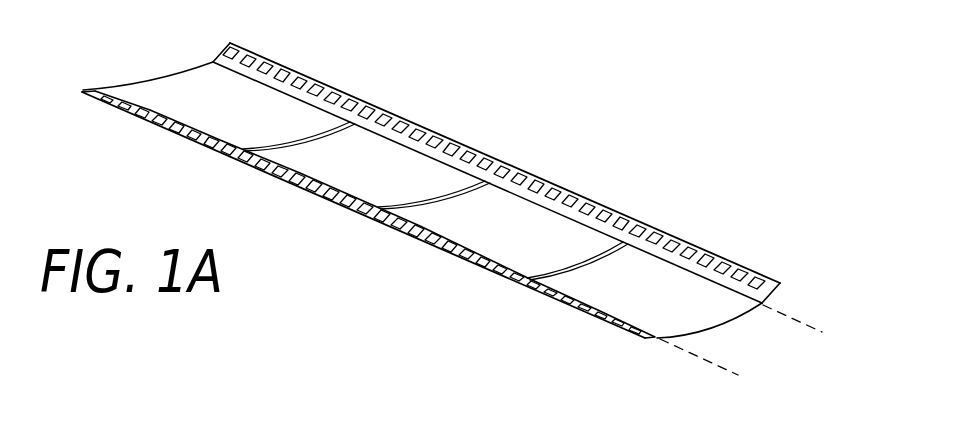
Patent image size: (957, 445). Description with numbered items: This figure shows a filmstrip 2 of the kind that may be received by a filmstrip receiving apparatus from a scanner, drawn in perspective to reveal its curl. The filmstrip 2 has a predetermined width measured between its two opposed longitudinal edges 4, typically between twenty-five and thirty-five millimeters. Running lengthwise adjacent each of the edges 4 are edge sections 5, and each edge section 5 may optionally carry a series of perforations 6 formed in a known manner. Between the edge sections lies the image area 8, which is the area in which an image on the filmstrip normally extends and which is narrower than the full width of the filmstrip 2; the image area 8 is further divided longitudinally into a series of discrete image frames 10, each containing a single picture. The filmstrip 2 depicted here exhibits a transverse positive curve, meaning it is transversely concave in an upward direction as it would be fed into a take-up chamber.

The filmstrip 2 is at (757, 168).
The longitudinal edges 4 is at (285, 63).
The edge sections 5 is at (667, 248).
The perforations 6 is at (333, 118).
The image area 8 is at (836, 328).
The image frames 10 is at (402, 173).